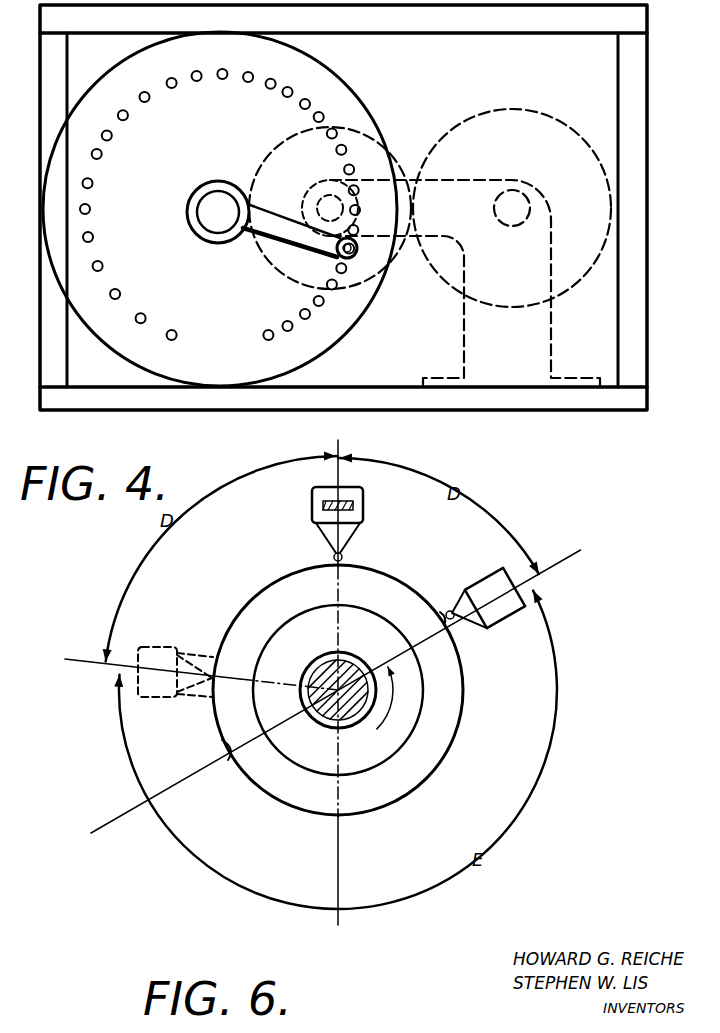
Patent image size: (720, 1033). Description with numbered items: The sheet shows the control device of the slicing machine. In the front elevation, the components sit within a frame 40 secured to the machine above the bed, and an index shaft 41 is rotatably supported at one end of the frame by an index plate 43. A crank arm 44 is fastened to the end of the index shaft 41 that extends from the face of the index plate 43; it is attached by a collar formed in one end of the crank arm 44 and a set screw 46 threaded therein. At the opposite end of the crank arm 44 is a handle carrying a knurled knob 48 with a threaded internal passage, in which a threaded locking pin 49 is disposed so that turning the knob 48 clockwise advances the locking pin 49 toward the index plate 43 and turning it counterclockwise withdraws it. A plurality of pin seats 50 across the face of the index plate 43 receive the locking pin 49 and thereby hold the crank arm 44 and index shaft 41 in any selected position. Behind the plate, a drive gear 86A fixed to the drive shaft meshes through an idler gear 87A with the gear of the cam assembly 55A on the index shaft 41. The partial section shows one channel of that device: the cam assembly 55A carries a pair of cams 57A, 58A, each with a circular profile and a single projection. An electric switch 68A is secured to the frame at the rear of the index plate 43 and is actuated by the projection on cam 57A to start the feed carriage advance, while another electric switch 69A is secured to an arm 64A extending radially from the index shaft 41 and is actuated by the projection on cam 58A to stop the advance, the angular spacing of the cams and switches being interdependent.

In FIG. 4, the frame 40 is at (490, 412).
In FIG. 4, the index plate 43 is at (125, 356).
In FIG. 4, the pin seats 50 is at (200, 79).
In FIG. 4, the set screw 46 is at (188, 196).
In FIG. 4, the index shaft 41 is at (190, 222).
In FIG. 6, the index shaft 41 is at (380, 650).
In FIG. 4, the locking pin 49 is at (318, 258).
In FIG. 4, the knurled knob 48 is at (340, 256).
In FIG. 4, the crank arm 44 is at (310, 208).
In FIG. 4, the idler gear 87A is at (438, 113).
In FIG. 4, the drive gear 86A is at (505, 108).
In FIG. 6, the cam assembly 55A is at (398, 800).
In FIG. 6, the cam 57A is at (232, 756).
In FIG. 6, the electric switch 68A is at (312, 512).
In FIG. 6, the arm 64A is at (467, 588).
In FIG. 6, the cam 58A is at (455, 620).
In FIG. 6, the electric switch 69A is at (150, 628).